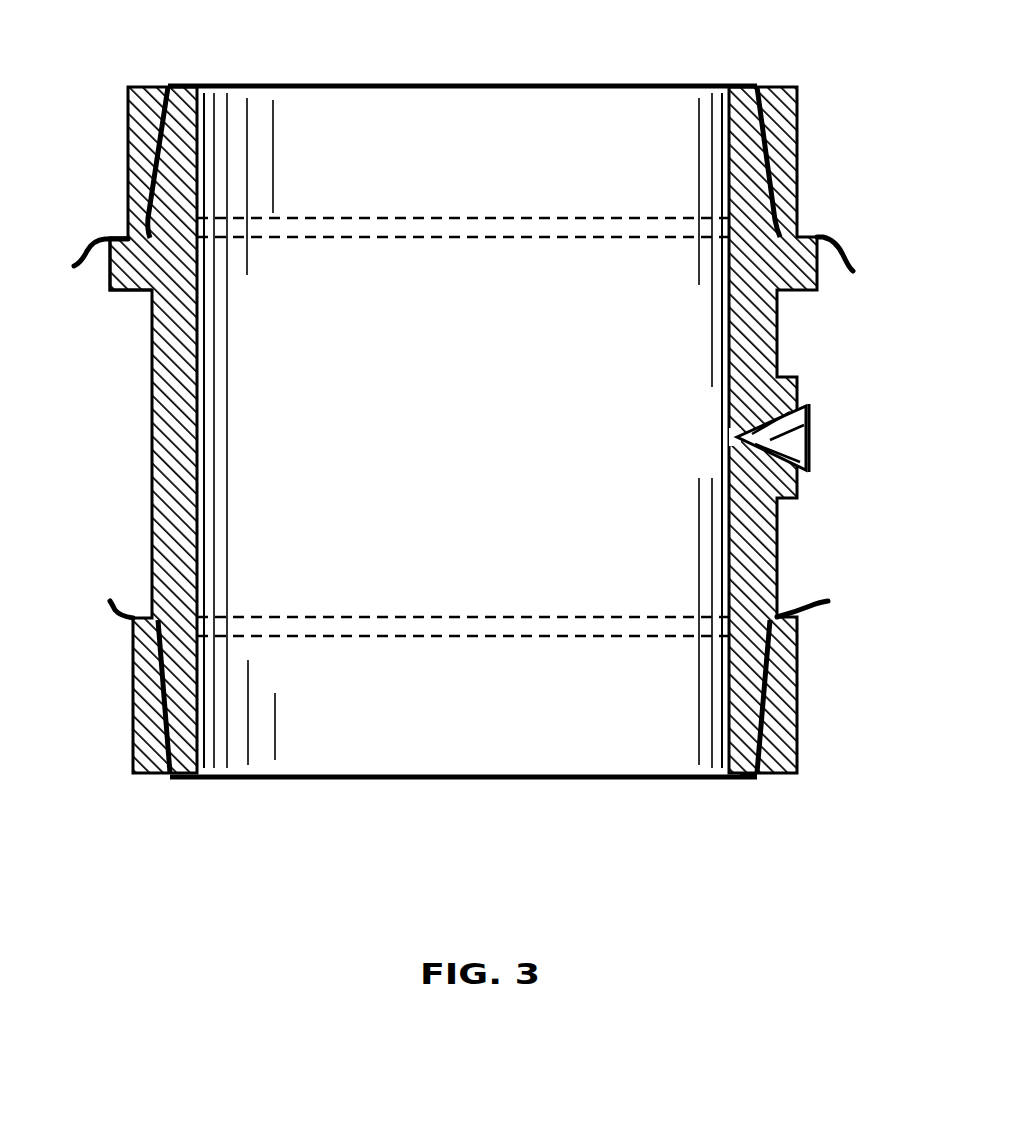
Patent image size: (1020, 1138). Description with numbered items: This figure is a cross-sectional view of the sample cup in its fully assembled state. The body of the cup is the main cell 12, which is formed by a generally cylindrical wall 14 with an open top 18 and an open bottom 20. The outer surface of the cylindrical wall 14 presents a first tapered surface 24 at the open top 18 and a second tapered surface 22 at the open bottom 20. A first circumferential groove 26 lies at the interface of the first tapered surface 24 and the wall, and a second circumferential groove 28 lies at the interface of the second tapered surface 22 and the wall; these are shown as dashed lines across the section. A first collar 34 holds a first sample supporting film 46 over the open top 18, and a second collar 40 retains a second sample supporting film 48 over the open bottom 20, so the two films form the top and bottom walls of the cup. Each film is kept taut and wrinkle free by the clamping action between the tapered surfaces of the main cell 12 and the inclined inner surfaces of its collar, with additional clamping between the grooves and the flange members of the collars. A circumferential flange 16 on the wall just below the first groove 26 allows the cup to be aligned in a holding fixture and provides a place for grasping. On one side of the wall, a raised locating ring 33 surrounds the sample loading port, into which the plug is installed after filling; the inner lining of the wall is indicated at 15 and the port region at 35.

The main cell component 12 is at (110, 381).
The cylindrical wall 14 is at (152, 520).
The inner liner 15 is at (240, 443).
The circumferential flange 16 is at (136, 290).
The open top 18 is at (688, 85).
The open bottom 20 is at (224, 781).
The second tapered surface 22 is at (738, 779).
The first tapered surface 24 is at (172, 153).
The first circumferential groove 26 is at (233, 215).
The second circumferential groove 28 is at (693, 642).
The raised locating ring 33 is at (797, 391).
The first collar 34 is at (796, 138).
The set screw 35 is at (734, 438).
The second collar 40 is at (797, 686).
The first sample supporting film 46 is at (830, 234).
The second sample supporting film 48 is at (829, 603).